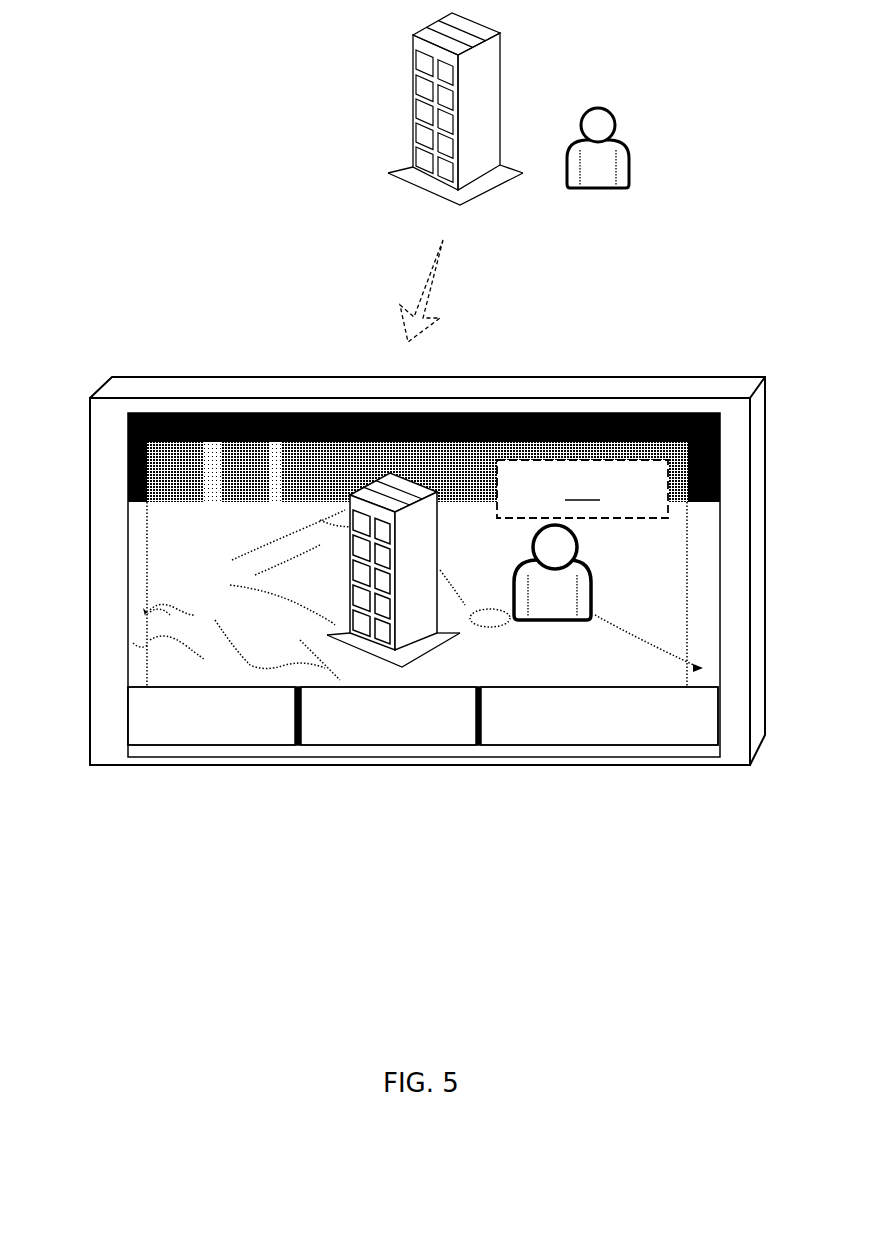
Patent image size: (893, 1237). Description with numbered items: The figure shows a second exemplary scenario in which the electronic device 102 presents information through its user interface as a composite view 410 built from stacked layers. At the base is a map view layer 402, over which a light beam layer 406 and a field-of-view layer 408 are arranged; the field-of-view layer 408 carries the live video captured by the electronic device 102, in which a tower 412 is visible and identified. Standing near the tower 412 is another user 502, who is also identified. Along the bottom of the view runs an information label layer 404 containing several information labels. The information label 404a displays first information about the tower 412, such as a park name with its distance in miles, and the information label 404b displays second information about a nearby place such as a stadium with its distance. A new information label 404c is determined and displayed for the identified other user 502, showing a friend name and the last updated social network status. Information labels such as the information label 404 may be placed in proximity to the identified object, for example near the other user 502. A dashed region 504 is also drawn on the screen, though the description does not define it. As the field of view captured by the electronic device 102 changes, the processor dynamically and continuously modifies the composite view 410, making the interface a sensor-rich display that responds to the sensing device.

The electronic device 102 is at (673, 375).
The map view layer 402 is at (135, 548).
The information label layer 404 is at (710, 687).
The information label 404a is at (212, 738).
The information label 404b is at (358, 737).
The information label 404c is at (553, 743).
The light beam layer 406 is at (205, 455).
The field-of-view layer 408 is at (147, 625).
The composite view 410 is at (722, 445).
The tower 412 is at (502, 117).
The other user 502 is at (622, 137).
The information window 504 is at (600, 500).